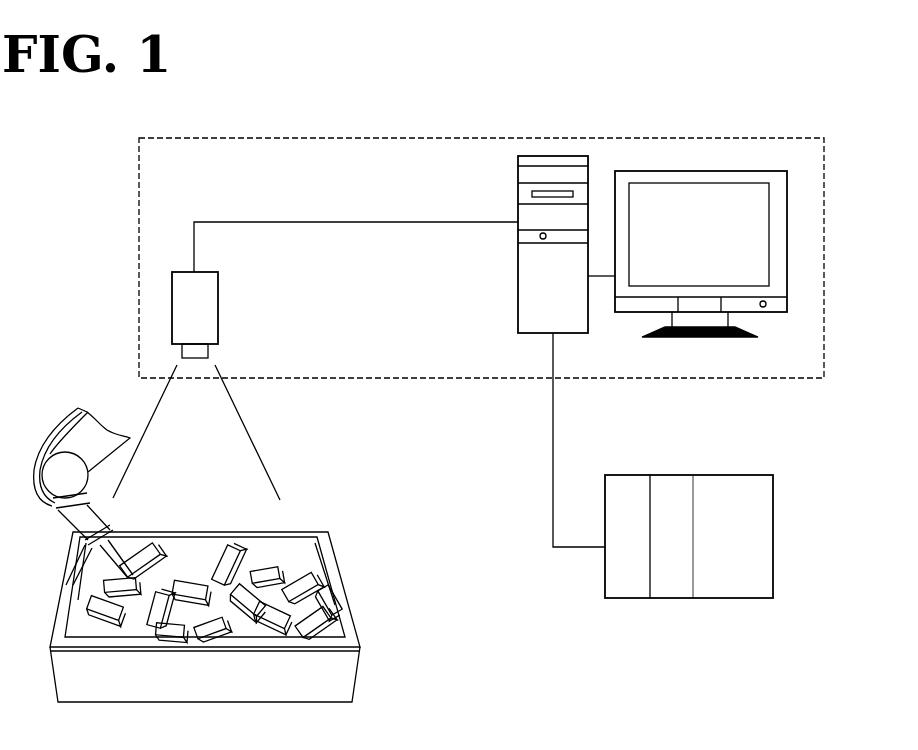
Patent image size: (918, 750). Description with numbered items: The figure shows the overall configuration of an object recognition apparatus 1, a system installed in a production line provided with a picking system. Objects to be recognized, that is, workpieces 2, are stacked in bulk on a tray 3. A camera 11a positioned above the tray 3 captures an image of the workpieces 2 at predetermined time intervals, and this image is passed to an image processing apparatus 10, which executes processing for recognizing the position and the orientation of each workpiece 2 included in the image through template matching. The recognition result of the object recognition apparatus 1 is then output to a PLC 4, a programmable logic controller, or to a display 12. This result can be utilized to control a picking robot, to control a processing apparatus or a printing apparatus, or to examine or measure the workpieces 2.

The object recognition apparatus 1 is at (826, 186).
The image processing apparatus 10 is at (518, 198).
The camera 11a is at (218, 302).
The display 12 is at (787, 262).
The object 2 is at (162, 550).
The tray 3 is at (343, 582).
The PLC 4 is at (773, 535).